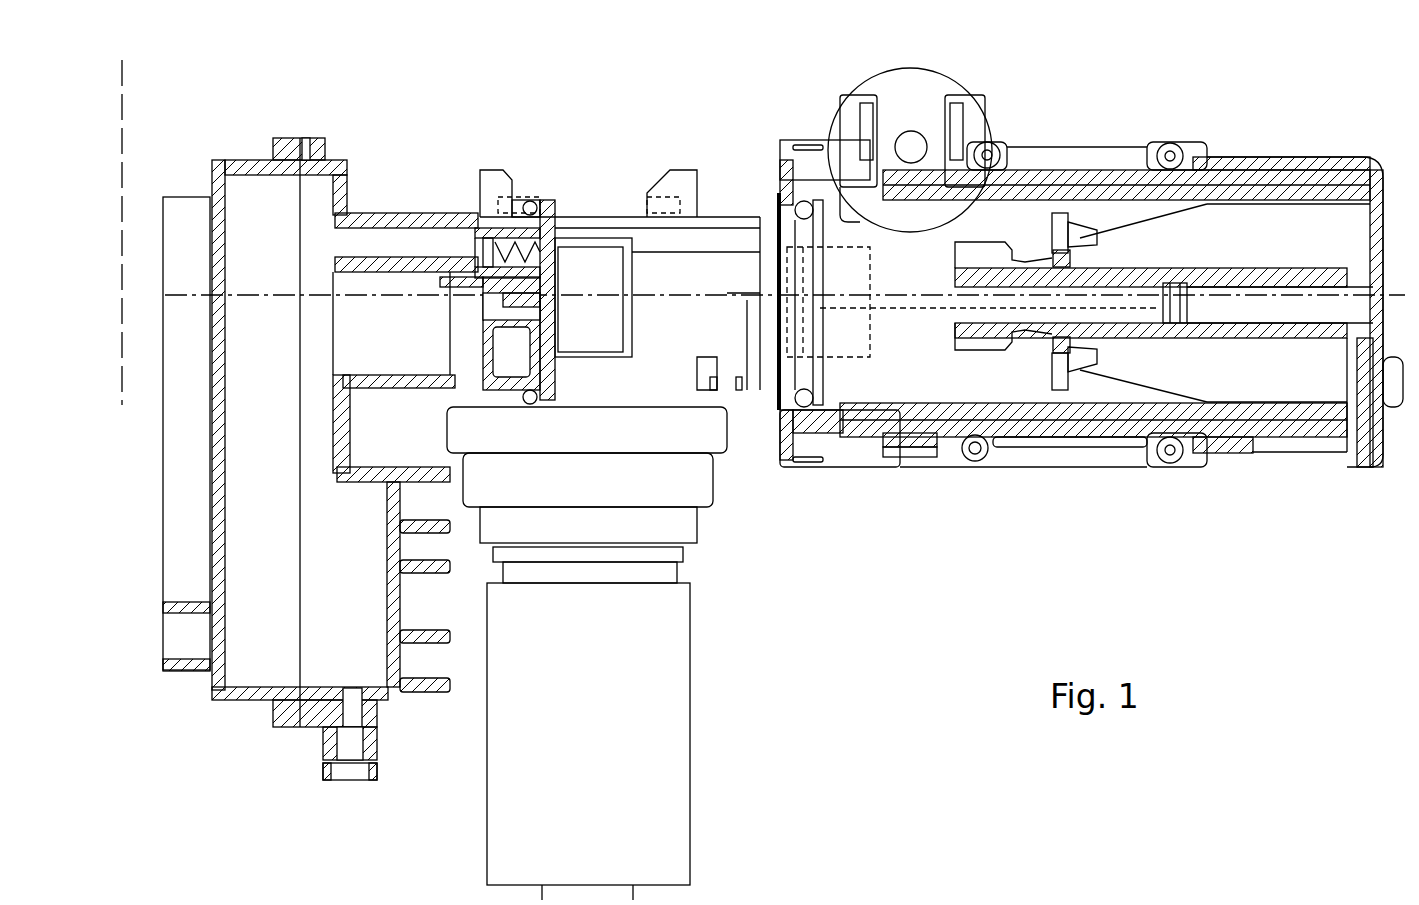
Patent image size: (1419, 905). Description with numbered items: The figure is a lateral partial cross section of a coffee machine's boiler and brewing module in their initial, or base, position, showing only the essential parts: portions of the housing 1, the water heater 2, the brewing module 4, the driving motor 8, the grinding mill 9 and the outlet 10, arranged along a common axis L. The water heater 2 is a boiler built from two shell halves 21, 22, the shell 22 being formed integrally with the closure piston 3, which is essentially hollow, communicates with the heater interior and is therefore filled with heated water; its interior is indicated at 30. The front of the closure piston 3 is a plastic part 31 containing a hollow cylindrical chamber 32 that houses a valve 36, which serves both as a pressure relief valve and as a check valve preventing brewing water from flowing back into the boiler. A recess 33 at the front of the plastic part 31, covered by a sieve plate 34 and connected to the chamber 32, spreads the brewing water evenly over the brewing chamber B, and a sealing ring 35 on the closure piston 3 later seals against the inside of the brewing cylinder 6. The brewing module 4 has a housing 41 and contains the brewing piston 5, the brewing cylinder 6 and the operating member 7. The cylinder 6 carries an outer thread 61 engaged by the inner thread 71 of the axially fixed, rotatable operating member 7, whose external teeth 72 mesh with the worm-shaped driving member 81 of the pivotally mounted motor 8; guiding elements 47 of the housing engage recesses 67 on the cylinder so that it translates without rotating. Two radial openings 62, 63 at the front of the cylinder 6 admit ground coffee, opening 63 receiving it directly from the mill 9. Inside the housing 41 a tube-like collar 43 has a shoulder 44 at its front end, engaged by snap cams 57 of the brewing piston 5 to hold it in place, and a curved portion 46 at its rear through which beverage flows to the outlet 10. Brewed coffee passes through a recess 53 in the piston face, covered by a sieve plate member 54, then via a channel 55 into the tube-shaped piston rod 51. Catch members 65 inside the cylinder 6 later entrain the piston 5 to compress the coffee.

The housing 1 is at (124, 112).
The longitudinal axis L is at (188, 298).
The water heater 2 is at (339, 782).
The half of the water heater 21 is at (212, 695).
The shell 22 is at (400, 698).
The closure piston 3 is at (417, 203).
The hub bore 30 is at (388, 325).
The plastic part 31 is at (554, 193).
The chamber 32 is at (560, 268).
The recess 33 is at (553, 330).
The sieve plate 34 is at (562, 265).
The sealing ring 35 is at (537, 198).
The valve 36 is at (512, 340).
The brewing chamber B is at (619, 196).
The recess 53 is at (721, 398).
The sieve plate member 54 is at (771, 322).
The channel 55 is at (805, 292).
The grinding mill 9 is at (658, 790).
The brewing piston 5 is at (778, 395).
The brewing cylinder 6 is at (798, 413).
The radial opening 62 is at (847, 260).
The radial opening 63 is at (812, 167).
The driving motor 8 is at (985, 122).
The driving member 81 is at (963, 113).
The guiding elements 47 is at (1186, 150).
The housing 41 is at (1318, 168).
The tube-like collar 43 is at (1323, 273).
The brewing module 4 is at (1128, 480).
The shoulder 44 is at (1000, 270).
The curved portion 46 is at (1362, 380).
The outlet 10 is at (1377, 477).
The piston rod 51 is at (913, 290).
The catch members 65 is at (1060, 218).
The recesses 67 is at (1162, 173).
The snap cams 57 is at (1022, 340).
The outer thread 61 is at (1070, 400).
The operating member 7 is at (908, 462).
The inner thread 71 is at (893, 418).
The teeth 72 is at (933, 443).